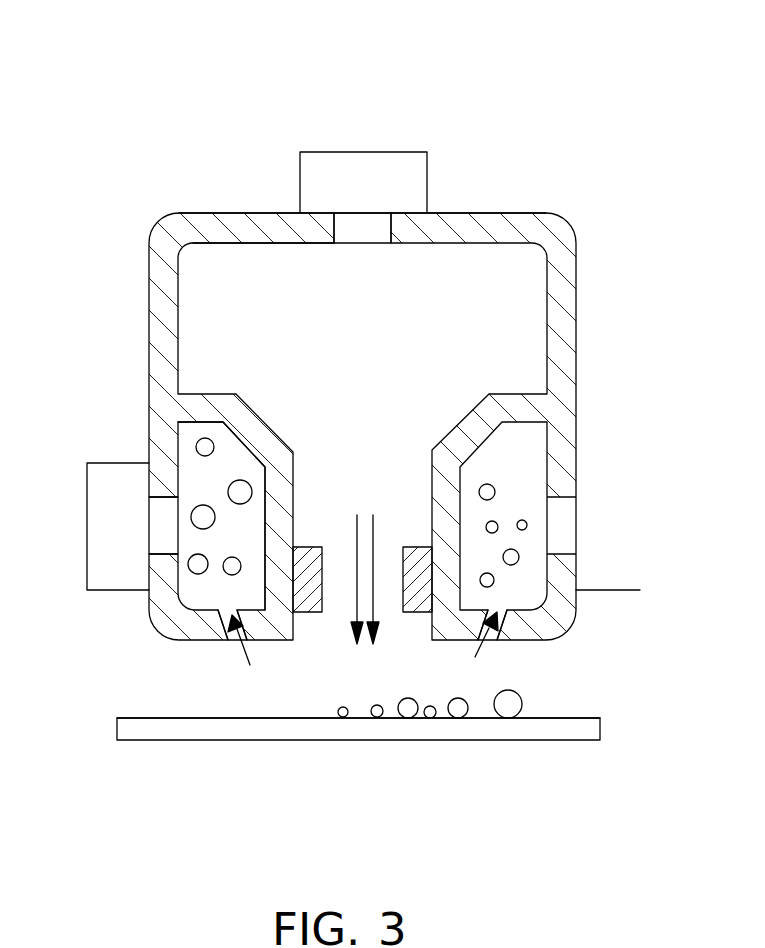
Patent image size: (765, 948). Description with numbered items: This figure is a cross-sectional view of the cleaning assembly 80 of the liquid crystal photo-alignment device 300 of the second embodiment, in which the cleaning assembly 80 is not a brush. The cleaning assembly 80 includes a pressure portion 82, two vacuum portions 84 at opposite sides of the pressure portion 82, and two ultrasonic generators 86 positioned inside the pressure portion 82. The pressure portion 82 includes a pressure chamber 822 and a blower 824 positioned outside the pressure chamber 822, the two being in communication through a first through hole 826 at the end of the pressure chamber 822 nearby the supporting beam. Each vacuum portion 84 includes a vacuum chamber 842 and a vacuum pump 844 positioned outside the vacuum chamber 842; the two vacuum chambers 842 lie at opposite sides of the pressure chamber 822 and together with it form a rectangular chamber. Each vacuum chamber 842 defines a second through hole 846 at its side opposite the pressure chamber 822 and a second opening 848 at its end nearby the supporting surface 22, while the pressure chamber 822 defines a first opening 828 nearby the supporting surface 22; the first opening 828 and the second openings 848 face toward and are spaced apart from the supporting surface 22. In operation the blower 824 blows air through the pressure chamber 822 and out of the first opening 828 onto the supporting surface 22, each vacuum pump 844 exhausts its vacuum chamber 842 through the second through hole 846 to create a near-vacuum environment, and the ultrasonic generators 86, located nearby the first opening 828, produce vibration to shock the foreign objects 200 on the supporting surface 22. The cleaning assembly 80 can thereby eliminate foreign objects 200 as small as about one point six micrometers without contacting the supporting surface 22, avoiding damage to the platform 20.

The liquid crystal photo-alignment device 300 is at (354, 46).
The cleaning assembly 80 is at (565, 322).
The pressure portion 82 is at (150, 98).
The pressure chamber 822 is at (257, 228).
The blower 824 is at (312, 162).
The first through hole 826 is at (372, 230).
The vacuum portion 84 is at (70, 370).
The vacuum chamber 842 is at (170, 455).
The vacuum pump 844 is at (137, 488).
The second through hole 846 is at (160, 535).
The second opening 848 is at (237, 637).
The ultrasonic generator 86 is at (307, 593).
The first opening 828 is at (390, 632).
The supporting surface 22 is at (548, 717).
The platform 20 is at (568, 732).
The foreign objects 200 is at (455, 710).